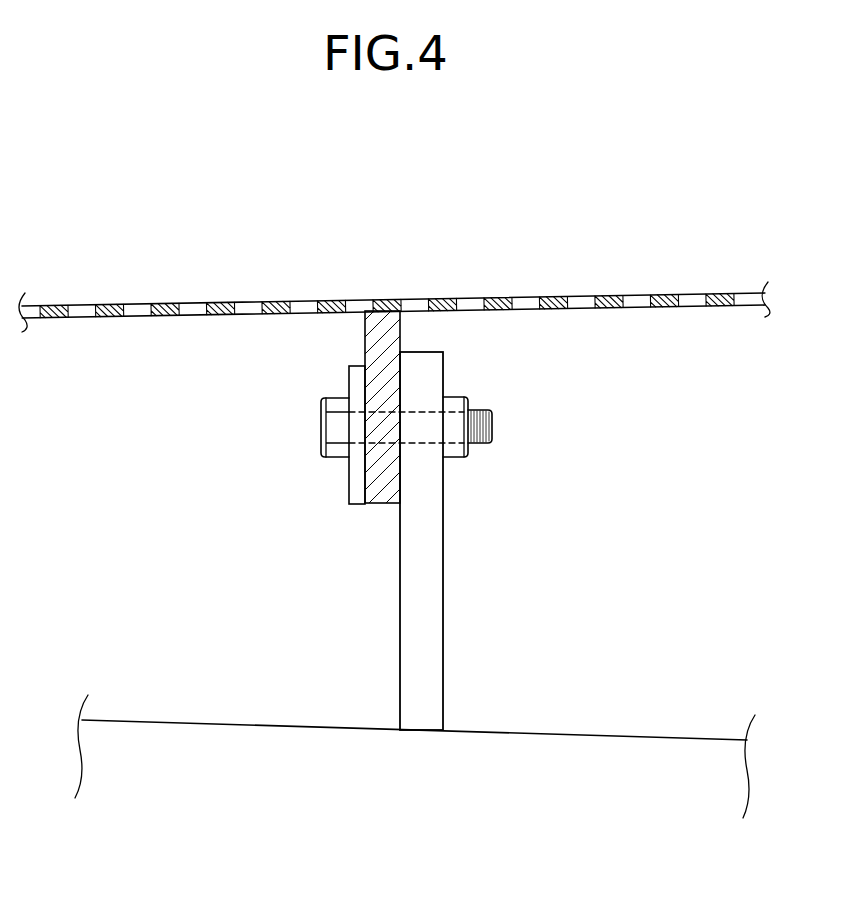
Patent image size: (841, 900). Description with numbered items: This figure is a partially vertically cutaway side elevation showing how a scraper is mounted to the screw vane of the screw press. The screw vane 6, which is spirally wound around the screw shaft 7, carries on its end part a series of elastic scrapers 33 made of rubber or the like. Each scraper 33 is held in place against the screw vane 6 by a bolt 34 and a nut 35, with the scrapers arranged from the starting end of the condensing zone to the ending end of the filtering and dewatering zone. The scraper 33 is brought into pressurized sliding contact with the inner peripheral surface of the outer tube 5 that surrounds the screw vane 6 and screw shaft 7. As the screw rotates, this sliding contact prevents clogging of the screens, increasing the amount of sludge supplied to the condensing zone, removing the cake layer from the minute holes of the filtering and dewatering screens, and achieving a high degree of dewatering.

The outer tube 5 is at (195, 303).
The elastic scraper 33 is at (377, 323).
The screw vane 6 is at (426, 352).
The bolt 34 is at (321, 432).
The nut 35 is at (457, 458).
The screw shaft 7 is at (477, 733).